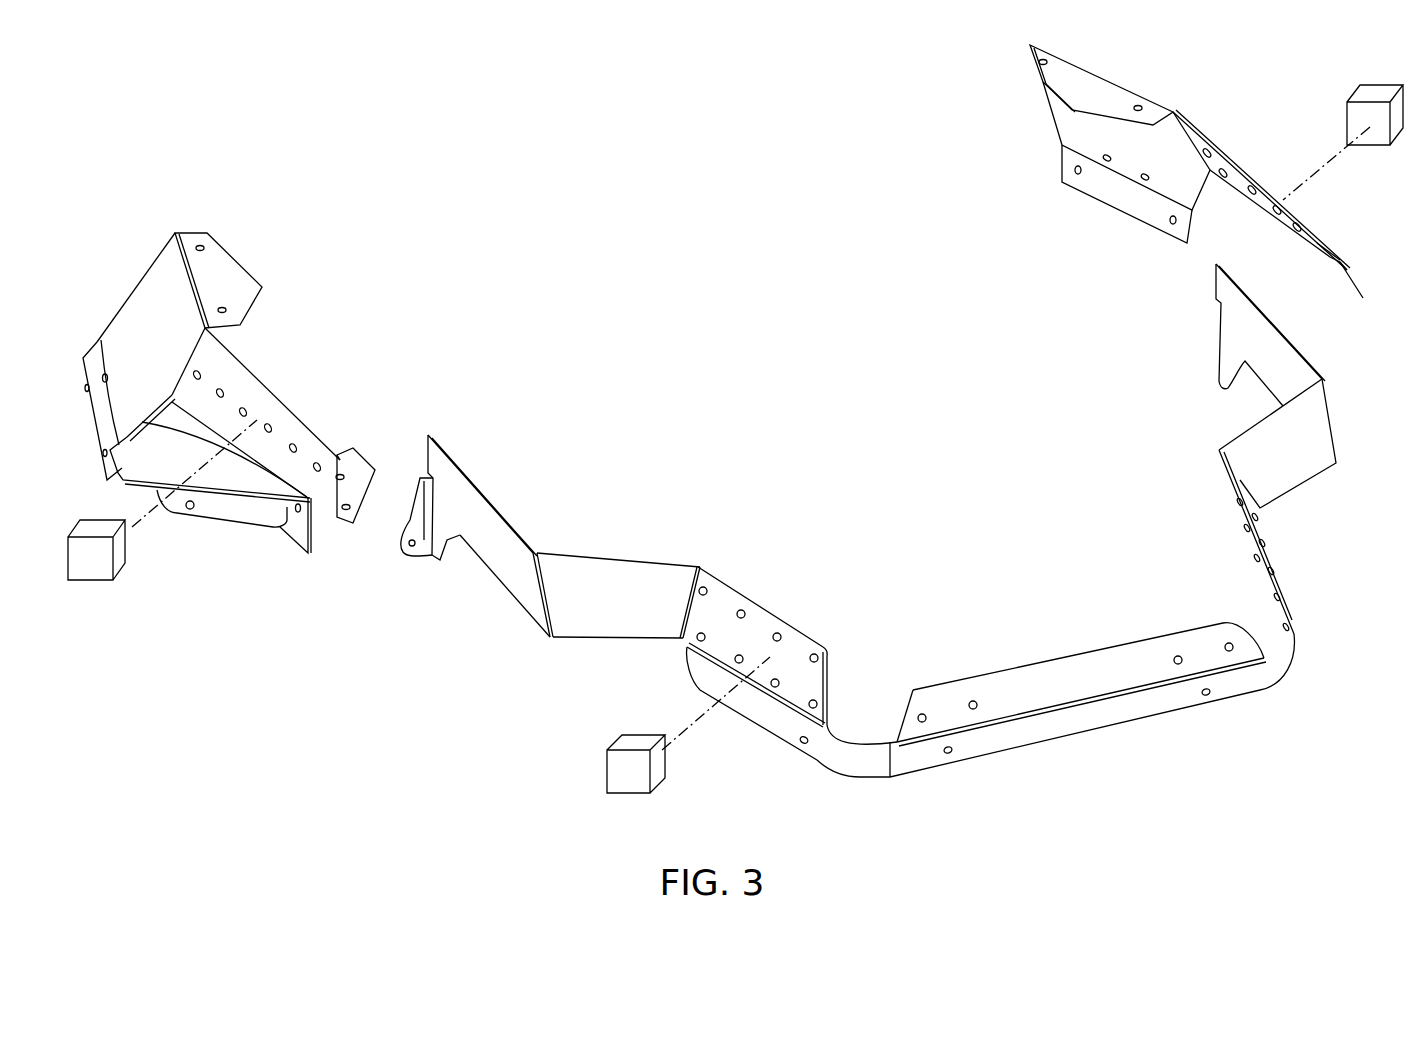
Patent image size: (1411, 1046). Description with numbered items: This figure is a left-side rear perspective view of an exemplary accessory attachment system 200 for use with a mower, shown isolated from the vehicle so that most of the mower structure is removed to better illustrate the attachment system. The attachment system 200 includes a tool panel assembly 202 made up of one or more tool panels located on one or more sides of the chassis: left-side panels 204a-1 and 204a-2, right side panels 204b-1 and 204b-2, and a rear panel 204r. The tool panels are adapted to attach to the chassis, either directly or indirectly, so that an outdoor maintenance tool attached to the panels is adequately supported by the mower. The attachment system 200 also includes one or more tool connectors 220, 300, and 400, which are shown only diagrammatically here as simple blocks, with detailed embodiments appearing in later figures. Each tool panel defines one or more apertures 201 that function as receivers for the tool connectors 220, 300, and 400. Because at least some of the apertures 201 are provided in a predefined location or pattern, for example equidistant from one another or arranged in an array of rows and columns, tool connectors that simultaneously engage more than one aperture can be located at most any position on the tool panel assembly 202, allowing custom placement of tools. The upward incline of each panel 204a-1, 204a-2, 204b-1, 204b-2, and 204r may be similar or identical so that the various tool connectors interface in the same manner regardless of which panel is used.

The accessory attachment system 200 is at (621, 192).
The apertures 201 is at (113, 400).
The tool panel assembly 202 is at (400, 363).
The left-side panel 204a-1 is at (267, 392).
The left-side panel 204a-2 is at (817, 514).
The right side panel 204b-1 is at (1104, 219).
The right side panel 204b-2 is at (1232, 508).
The rear panel 204r is at (1018, 668).
The tool connector 220 is at (1355, 88).
The tool connector 300 is at (91, 582).
The tool connector 400 is at (604, 770).